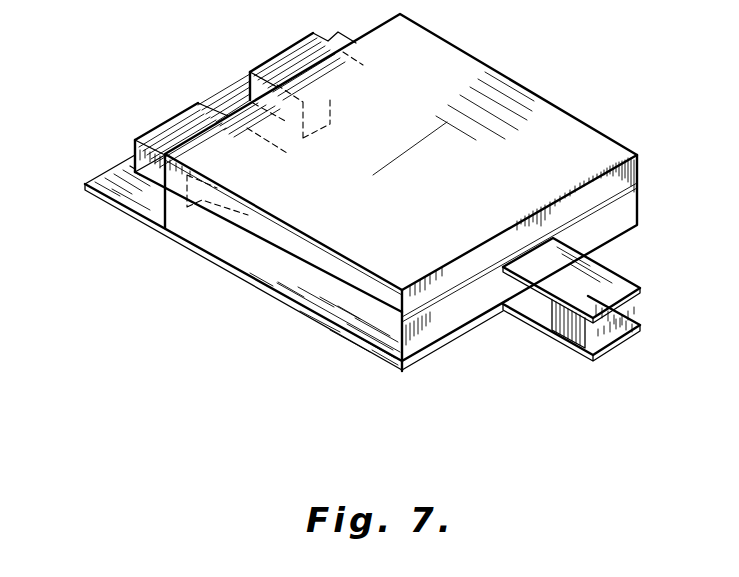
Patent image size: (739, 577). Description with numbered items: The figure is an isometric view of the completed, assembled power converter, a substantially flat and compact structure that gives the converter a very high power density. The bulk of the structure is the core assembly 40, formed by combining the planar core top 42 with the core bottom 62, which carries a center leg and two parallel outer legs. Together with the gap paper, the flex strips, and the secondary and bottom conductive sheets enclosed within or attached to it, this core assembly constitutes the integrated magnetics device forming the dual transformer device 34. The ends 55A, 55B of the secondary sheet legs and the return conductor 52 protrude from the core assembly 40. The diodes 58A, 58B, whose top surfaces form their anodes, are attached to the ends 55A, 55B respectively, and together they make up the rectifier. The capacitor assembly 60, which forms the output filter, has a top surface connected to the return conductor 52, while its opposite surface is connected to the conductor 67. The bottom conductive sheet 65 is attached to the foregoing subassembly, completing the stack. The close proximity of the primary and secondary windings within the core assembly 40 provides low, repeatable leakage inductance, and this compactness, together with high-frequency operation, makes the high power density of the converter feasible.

The dual transformer device 34 is at (542, 71).
The core assembly 40 is at (553, 152).
The core top 42 is at (333, 275).
The return conductor 52 is at (617, 285).
The end of leg 55A is at (163, 125).
The end of leg 55B is at (289, 56).
The diode 58A is at (133, 171).
The diode 58B is at (245, 95).
The capacitor assembly 60 is at (570, 323).
The core bottom 62 is at (343, 322).
The bottom conductive sheet 65 is at (128, 197).
The conductor 67 is at (603, 343).